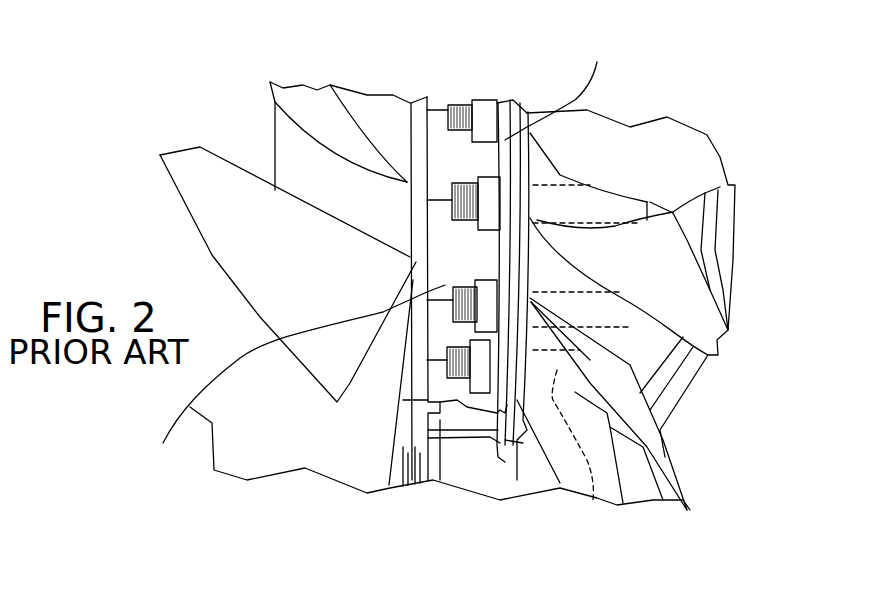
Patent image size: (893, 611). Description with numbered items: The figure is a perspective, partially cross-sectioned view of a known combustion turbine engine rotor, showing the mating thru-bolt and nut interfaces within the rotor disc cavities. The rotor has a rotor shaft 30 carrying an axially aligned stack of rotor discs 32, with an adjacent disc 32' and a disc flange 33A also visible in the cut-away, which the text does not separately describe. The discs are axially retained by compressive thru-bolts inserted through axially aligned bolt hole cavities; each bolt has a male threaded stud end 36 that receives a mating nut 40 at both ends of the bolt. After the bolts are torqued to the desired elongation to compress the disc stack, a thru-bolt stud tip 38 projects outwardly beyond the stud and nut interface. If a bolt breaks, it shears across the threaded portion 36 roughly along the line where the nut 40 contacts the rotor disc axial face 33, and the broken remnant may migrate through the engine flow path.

The rotor shaft 30 is at (260, 317).
The rotor disc 32 is at (665, 345).
The blade 32' is at (264, 241).
The rotor disc axial face 33 is at (520, 210).
The disk flange 33A is at (450, 203).
The male threaded stud end 36 is at (546, 195).
The thru-bolt stud tip 38 is at (468, 177).
The nut 40 is at (490, 190).